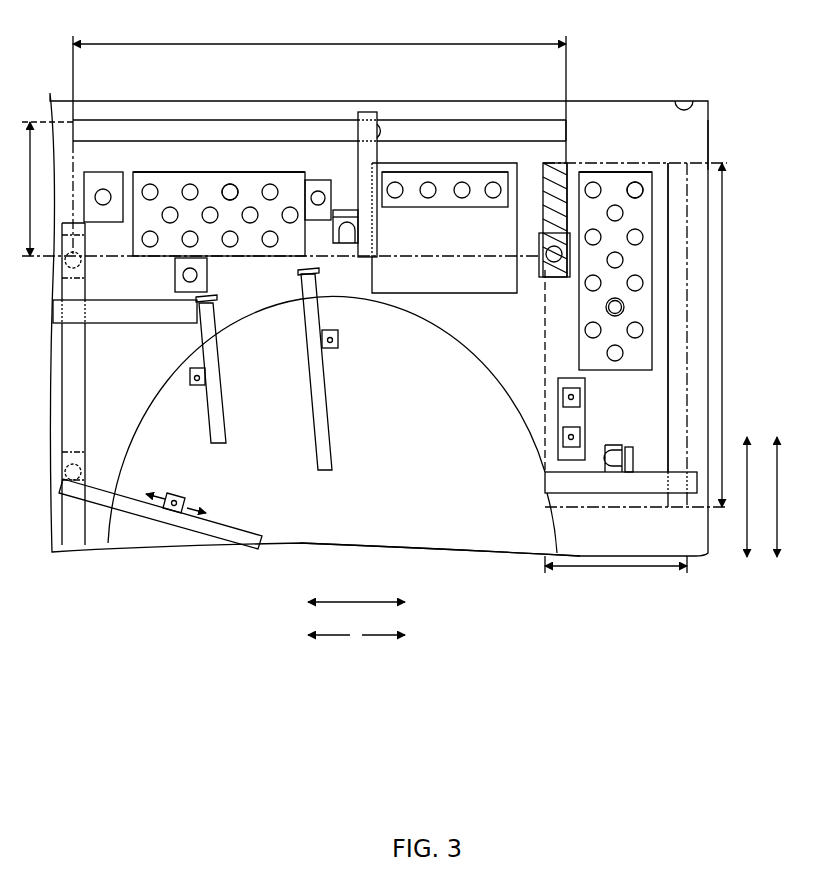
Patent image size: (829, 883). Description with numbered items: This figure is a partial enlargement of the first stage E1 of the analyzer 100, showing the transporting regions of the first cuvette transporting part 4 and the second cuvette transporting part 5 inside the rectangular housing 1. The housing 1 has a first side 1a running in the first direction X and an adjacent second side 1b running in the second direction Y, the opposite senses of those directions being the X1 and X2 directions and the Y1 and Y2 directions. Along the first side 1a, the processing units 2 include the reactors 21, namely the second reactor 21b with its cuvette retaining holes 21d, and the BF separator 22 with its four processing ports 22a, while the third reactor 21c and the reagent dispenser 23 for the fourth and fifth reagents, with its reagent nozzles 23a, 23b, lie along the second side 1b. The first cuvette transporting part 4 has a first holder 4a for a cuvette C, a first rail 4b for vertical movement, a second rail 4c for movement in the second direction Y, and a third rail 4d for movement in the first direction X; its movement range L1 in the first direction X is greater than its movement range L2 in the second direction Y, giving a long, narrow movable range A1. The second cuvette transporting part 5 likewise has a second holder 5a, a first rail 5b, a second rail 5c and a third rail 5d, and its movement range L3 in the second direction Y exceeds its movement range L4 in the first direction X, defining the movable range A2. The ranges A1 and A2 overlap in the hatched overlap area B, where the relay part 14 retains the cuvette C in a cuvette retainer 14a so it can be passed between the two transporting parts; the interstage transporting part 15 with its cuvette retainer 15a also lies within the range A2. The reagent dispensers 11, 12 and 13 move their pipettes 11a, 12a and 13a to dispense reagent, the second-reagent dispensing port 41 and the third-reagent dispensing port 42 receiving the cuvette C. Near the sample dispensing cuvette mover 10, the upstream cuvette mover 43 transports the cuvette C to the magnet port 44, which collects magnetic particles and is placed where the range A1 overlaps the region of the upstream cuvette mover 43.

The analyzer 100 is at (716, 106).
The housing 1 is at (714, 121).
The first side 1a is at (686, 104).
The second side 1b is at (706, 147).
The processing units 2 is at (147, 169).
The first cuvette transporting part 4 is at (356, 112).
The first holder 4a is at (338, 243).
The first rail 4b is at (345, 210).
The second rail 4c is at (375, 129).
The third rail 4d is at (409, 132).
The second cuvette transporting part 5 is at (694, 453).
The second holder 5a is at (612, 444).
The first rail 5b is at (631, 447).
The second rail 5c is at (626, 483).
The third rail 5d is at (678, 379).
The sample dispensing cuvette mover 10 is at (88, 364).
The reagent dispenser 11 is at (218, 525).
The pipette 11a is at (178, 494).
The reagent dispenser 12 is at (217, 357).
The pipette 12a is at (194, 386).
The reagent dispenser 13 is at (308, 360).
The pipette 13a is at (336, 348).
The relay part 14 is at (558, 193).
The cuvette retainer 14a is at (567, 180).
The interstage transporting part 15 is at (538, 273).
The cuvette retainer 15a is at (556, 262).
The reactors 21 is at (166, 172).
The second reactor 21b is at (166, 172).
The third reactor 21c is at (633, 176).
The cuvette retaining holes 21d is at (235, 187).
The BF separator 22 is at (445, 162).
The processing ports 22a is at (397, 196).
The R4/R5 reagent dispenser 23 is at (463, 417).
The R4 reagent nozzle 23a is at (560, 398).
The R5 reagent nozzle 23b is at (560, 437).
The R2 dispensing port 41 is at (198, 273).
The R3 dispensing port 42 is at (308, 177).
The upstream cuvette mover 43 is at (117, 314).
The magnet port 44 is at (105, 192).
The movable range A1 is at (400, 257).
The movable range A2 is at (540, 373).
The overlap area B is at (552, 160).
The cuvette C is at (625, 305).
The first stage E1 is at (443, 550).
The movement range L1 is at (319, 137).
The movement range L2 is at (40, 189).
The movement range L3 is at (734, 335).
The movement range L4 is at (616, 577).
The first direction X is at (356, 590).
The X1 direction X1 is at (331, 624).
The X2 direction X2 is at (383, 624).
The second direction Y is at (734, 489).
The Y1 direction Y1 is at (760, 497).
The Y2 direction Y2 is at (765, 497).